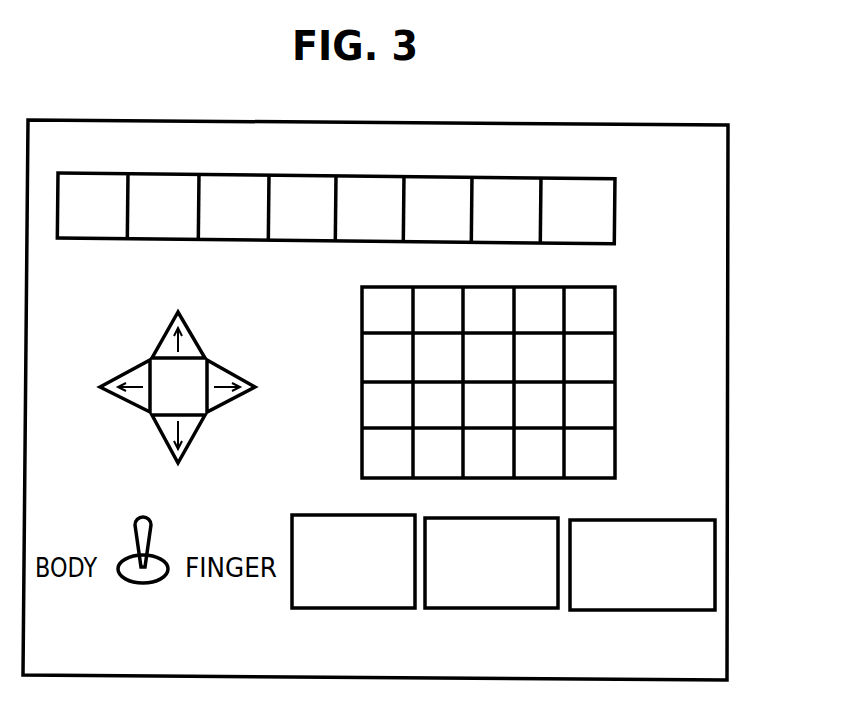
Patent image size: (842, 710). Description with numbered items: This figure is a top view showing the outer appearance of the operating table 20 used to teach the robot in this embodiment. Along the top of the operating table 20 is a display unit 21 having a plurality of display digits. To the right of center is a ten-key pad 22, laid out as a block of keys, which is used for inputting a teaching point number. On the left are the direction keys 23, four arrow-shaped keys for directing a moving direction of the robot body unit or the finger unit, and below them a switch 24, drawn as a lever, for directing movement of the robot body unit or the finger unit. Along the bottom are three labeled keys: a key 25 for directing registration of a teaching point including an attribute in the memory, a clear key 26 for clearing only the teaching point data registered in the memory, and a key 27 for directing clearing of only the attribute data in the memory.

The operating table 20 is at (728, 136).
The display unit 21 is at (615, 202).
The ten-key pad 22 is at (615, 306).
The direction keys 23 is at (232, 356).
The switch 24 is at (152, 535).
The key for directing registration 25 is at (308, 608).
The clear key 26 is at (445, 608).
The key for directing clearing of attribute data 27 is at (588, 610).